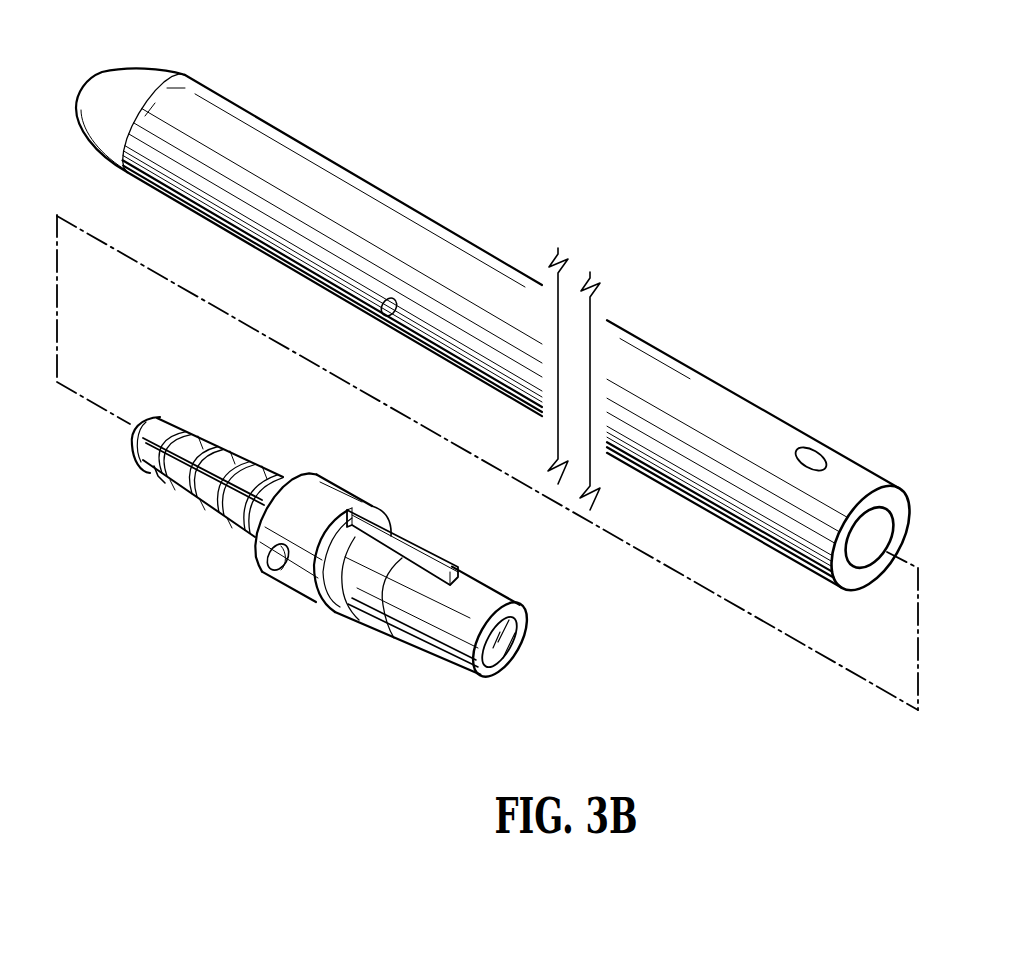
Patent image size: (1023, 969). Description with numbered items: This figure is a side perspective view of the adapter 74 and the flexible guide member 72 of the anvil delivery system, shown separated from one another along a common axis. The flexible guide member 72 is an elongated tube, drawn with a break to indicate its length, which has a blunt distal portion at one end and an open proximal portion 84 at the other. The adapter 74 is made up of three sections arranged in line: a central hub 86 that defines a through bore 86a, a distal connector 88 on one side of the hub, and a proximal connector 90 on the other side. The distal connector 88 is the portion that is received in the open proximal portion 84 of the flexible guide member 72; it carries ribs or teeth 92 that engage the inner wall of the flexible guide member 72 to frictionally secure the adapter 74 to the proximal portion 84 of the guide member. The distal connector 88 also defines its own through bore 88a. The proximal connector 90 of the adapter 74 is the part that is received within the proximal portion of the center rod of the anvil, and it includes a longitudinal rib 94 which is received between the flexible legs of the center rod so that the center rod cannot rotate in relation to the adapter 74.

The flexible guide member 72 is at (478, 242).
The adapter 74 is at (395, 702).
The open proximal portion 84 is at (860, 558).
The central hub 86 is at (304, 568).
The through bore 86a is at (266, 568).
The distal connector 88 is at (183, 458).
The through bore 88a is at (158, 482).
The proximal connector 90 is at (458, 622).
The ribs or teeth 92 is at (240, 440).
The longitudinal rib 94 is at (433, 568).